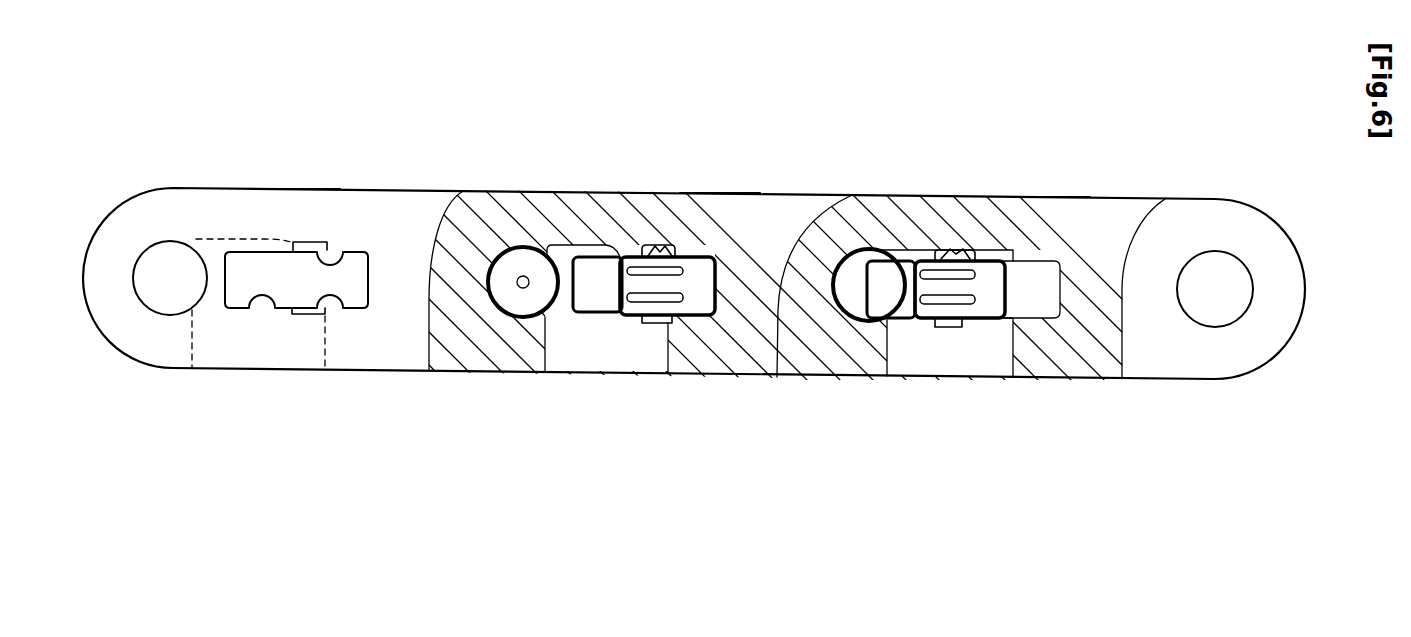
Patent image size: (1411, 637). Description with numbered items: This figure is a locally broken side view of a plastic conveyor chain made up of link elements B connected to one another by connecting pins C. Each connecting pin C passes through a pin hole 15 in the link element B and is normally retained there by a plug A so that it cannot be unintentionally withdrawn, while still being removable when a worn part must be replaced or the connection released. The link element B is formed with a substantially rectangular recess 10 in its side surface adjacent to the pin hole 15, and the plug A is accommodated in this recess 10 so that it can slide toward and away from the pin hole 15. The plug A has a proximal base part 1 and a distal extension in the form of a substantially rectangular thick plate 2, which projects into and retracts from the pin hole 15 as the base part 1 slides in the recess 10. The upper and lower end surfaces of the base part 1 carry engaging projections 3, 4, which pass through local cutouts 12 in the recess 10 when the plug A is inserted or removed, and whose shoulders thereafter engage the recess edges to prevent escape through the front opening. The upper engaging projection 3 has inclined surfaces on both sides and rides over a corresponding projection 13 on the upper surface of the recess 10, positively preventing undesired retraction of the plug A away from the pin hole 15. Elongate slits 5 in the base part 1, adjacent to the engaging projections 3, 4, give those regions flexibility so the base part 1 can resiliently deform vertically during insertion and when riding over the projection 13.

The base part 1 is at (735, 240).
The extension plate 2 is at (596, 297).
The engaging projection 3 is at (658, 250).
The engaging projection 4 is at (655, 323).
The slits 5 is at (713, 262).
The recess 10 is at (1072, 284).
The cutouts 12 is at (347, 258).
The projection 13 is at (630, 250).
The pin hole 15 is at (160, 248).
The plug A is at (627, 317).
The link element B is at (300, 190).
The connecting pin C is at (517, 262).